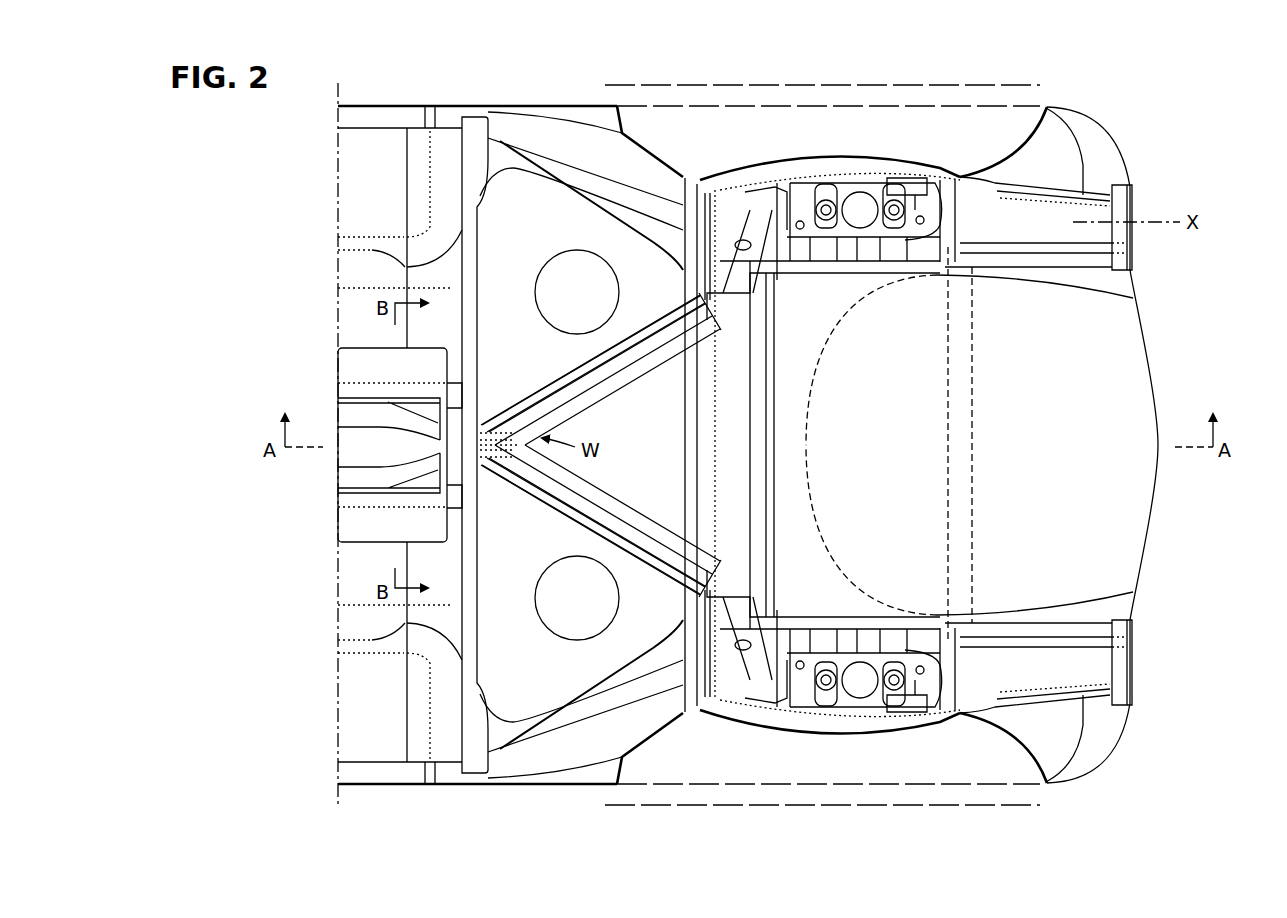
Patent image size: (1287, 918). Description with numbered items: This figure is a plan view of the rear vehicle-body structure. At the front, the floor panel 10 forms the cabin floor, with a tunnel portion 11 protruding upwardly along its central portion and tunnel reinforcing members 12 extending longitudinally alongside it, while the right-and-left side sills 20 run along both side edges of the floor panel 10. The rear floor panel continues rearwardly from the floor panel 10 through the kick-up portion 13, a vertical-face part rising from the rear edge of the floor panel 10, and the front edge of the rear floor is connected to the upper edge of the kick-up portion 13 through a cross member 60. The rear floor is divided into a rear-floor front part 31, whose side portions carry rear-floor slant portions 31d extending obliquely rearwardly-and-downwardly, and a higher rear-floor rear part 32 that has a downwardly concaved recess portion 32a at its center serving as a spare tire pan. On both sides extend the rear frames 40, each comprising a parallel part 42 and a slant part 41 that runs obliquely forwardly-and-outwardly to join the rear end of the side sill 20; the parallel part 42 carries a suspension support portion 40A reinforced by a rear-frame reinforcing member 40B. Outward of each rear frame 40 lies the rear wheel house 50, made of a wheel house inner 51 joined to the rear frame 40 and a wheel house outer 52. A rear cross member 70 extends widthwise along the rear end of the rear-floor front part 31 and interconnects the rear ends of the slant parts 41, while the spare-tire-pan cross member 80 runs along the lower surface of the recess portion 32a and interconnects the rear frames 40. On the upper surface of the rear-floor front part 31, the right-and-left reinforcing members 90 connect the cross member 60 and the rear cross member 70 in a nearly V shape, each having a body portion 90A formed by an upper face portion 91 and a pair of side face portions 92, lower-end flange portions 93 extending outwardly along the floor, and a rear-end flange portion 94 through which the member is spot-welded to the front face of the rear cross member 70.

The floor panel 10 is at (345, 218).
The tunnel portion 11 is at (345, 447).
The tunnel reinforcing member 12 is at (348, 413).
The kick-up portion 13 is at (462, 180).
The side sill 20 is at (462, 106).
The rear-floor front part 31 is at (521, 243).
The rear-floor slant portion 31d is at (642, 297).
The rear-floor rear part 32 is at (1031, 429).
The recess portion 32a is at (990, 528).
The rear frame 40 is at (1122, 205).
The suspension support portion 40A is at (857, 185).
The rear-frame reinforcing member 40B is at (904, 185).
The slant part 41 is at (670, 190).
The parallel part 42 is at (988, 205).
The rear wheel house 50 is at (1175, 80).
The wheel house inner 51 is at (1050, 117).
The wheel house outer 52 is at (1043, 90).
The cross member 60 is at (459, 156).
The rear cross member 70 is at (745, 383).
The spare-tire-pan cross member 80 is at (972, 317).
The reinforcing member 90 is at (544, 363).
The body portion 90A is at (526, 410).
The upper face portion 91 is at (602, 375).
The side face portion 92 is at (588, 363).
The lower-end flange portion 93 is at (617, 342).
The rear-end flange portion 94 is at (708, 310).